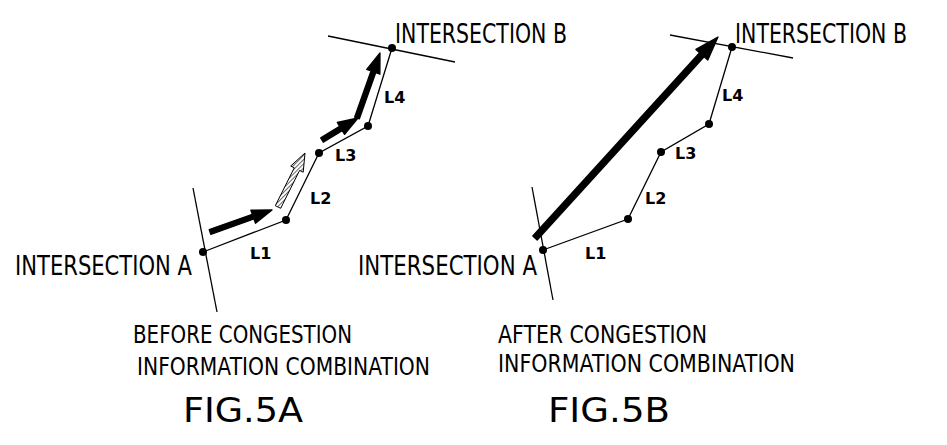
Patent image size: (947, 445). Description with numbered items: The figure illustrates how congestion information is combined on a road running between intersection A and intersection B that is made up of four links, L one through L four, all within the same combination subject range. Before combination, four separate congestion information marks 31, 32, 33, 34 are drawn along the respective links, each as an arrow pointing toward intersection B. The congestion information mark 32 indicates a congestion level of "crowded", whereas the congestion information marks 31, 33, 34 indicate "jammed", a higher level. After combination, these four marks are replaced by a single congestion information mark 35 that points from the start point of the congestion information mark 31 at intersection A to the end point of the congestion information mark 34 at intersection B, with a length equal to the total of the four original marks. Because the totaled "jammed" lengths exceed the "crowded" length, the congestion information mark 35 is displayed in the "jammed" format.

In FIG. 5A, the congestion information mark 31 is at (252, 210).
In FIG. 5A, the congestion information mark 32 is at (297, 158).
In FIG. 5A, the congestion information mark 33 is at (340, 120).
In FIG. 5A, the congestion information mark 34 is at (372, 63).
In FIG. 5B, the congestion information mark 35 is at (658, 100).